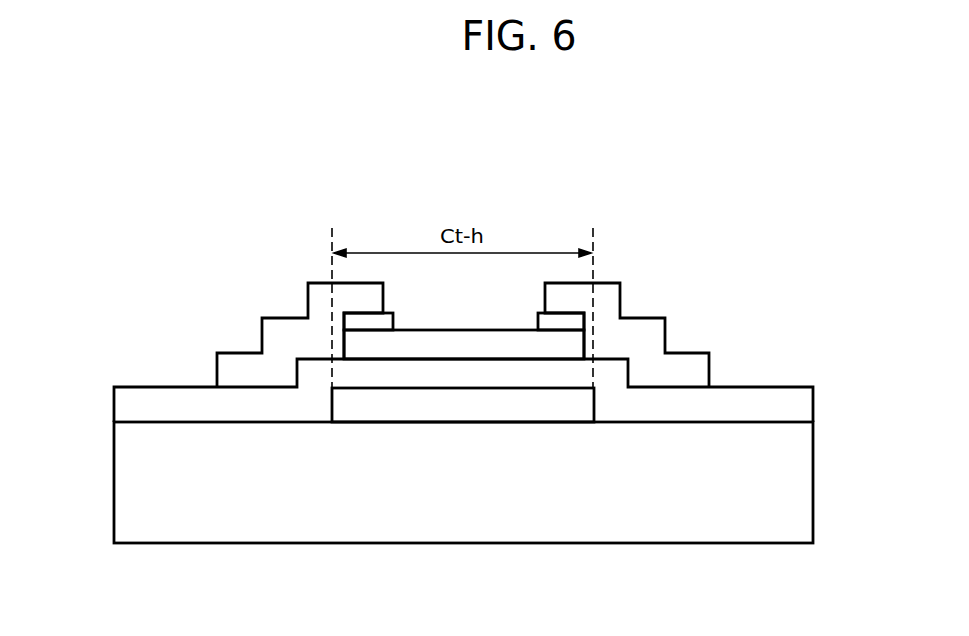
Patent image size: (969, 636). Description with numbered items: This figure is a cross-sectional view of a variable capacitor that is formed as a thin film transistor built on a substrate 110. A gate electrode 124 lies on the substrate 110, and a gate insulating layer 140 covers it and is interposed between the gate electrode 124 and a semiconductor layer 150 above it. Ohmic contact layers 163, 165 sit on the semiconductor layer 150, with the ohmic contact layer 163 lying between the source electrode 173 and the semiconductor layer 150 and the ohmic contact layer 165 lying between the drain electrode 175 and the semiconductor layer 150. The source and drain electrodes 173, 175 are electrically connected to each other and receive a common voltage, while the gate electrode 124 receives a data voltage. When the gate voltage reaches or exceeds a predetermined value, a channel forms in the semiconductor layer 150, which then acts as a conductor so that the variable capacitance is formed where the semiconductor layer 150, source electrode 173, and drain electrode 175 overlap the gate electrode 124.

The substrate 110 is at (138, 508).
The gate electrode 124 is at (527, 413).
The gate insulating layer 140 is at (792, 403).
The semiconductor layer 150 is at (510, 345).
The ohmic contact layer 163 is at (385, 322).
The ohmic contact layer 165 is at (570, 320).
The source electrode 173 is at (275, 328).
The drain electrode 175 is at (647, 342).